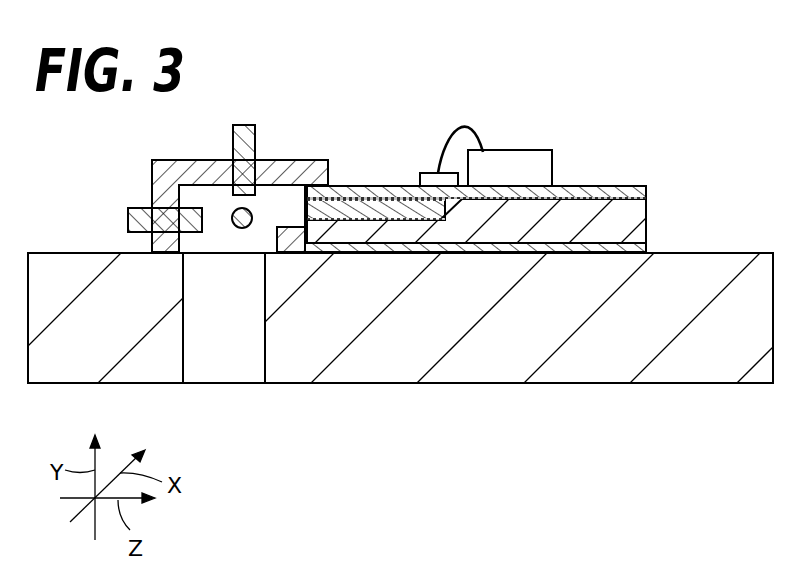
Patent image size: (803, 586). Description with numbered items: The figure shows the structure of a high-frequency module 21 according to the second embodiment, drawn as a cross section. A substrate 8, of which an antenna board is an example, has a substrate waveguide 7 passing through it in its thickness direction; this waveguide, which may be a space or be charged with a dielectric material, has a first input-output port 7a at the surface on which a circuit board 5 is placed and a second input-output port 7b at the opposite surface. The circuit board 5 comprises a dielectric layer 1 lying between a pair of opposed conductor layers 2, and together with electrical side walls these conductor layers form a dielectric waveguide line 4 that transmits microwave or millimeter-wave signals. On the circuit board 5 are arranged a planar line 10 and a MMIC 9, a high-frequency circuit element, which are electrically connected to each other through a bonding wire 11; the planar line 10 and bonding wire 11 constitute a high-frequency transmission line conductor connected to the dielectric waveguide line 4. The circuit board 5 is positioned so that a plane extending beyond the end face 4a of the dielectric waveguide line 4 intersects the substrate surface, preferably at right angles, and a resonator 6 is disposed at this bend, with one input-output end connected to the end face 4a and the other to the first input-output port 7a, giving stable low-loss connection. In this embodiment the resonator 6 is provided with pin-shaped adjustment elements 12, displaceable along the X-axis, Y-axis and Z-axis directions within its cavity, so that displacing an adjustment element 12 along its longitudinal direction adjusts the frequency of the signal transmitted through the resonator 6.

The dielectric layer 1 is at (625, 221).
The conductor layers 2 is at (337, 186).
The dielectric waveguide line 4 is at (370, 205).
The end face 4a is at (330, 255).
The circuit board 5 is at (663, 163).
The resonator 6 is at (300, 160).
The substrate waveguide 7 is at (237, 348).
The first input-output port 7a is at (228, 265).
The second input-output port 7b is at (195, 383).
The substrate 8 is at (467, 375).
The MMIC 9 is at (507, 158).
The planar line 10 is at (423, 183).
The bonding wire 11 is at (446, 136).
The adjustment elements 12 is at (243, 125).
The high-frequency module 21 is at (618, 97).